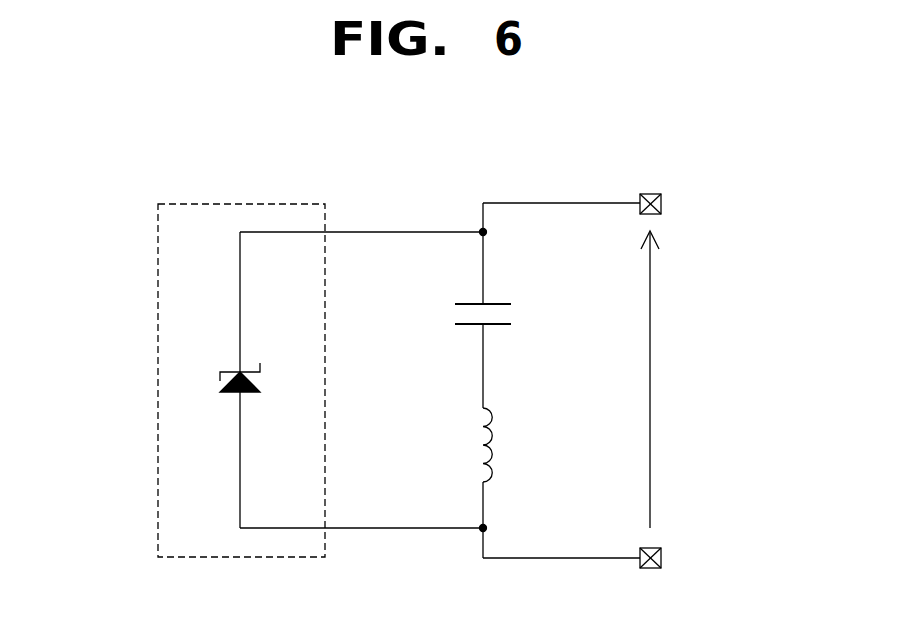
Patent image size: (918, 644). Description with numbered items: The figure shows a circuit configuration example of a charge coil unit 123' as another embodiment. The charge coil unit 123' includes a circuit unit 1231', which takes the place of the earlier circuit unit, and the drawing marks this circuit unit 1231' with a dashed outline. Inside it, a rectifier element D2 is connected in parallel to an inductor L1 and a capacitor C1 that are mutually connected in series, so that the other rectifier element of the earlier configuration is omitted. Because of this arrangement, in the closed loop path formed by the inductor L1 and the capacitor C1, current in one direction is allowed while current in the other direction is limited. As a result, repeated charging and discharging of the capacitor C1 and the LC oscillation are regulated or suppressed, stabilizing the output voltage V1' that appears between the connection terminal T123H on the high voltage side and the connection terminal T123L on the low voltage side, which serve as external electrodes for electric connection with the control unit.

The charge coil unit 123' is at (423, 379).
The circuit unit 1231' is at (241, 407).
The rectifier element D2 is at (220, 383).
The capacitor C1 is at (505, 318).
The inductor L1 is at (514, 445).
The connection terminal on the high voltage side T123H is at (695, 204).
The connection terminal on the low voltage side T123L is at (694, 559).